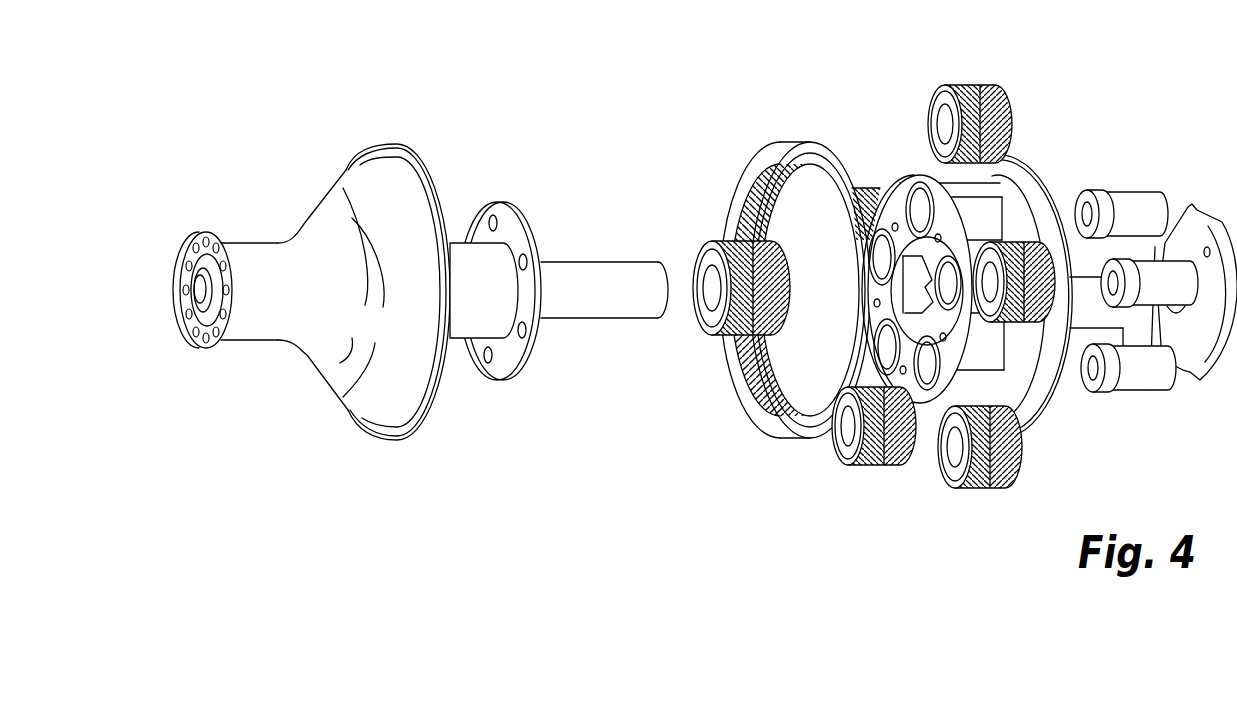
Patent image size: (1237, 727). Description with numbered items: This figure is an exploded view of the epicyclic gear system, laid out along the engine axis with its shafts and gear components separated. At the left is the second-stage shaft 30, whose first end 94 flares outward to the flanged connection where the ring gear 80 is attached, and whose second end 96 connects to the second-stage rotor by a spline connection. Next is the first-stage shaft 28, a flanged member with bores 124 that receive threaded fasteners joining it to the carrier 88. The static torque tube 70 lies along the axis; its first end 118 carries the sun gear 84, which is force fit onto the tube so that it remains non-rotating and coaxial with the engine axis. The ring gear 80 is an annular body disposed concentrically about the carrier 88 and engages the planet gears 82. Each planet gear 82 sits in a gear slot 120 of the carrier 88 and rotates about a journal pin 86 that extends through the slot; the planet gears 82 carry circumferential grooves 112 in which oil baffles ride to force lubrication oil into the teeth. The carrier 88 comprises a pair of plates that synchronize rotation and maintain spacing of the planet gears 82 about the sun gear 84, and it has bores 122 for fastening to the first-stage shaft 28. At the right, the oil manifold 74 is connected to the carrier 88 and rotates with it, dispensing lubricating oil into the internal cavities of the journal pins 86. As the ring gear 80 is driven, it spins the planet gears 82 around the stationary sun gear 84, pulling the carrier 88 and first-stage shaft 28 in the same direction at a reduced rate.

The second-stage shaft 30 is at (311, 276).
The first end 94 is at (373, 172).
The second end 96 is at (224, 349).
The first-stage shaft 28 is at (514, 268).
The bores 124 is at (520, 325).
The static torque tube 70 is at (607, 243).
The first end 118 is at (640, 278).
The ring gear 80 is at (800, 150).
The planet gears 82 is at (858, 281).
The sun gear 84 is at (710, 325).
The circumferential grooves 112 is at (967, 85).
The carrier 88 is at (989, 314).
The bores 122 is at (946, 341).
The journal pins 86 is at (1090, 292).
The gear slot 120 is at (1056, 192).
The oil manifold 74 is at (1210, 323).